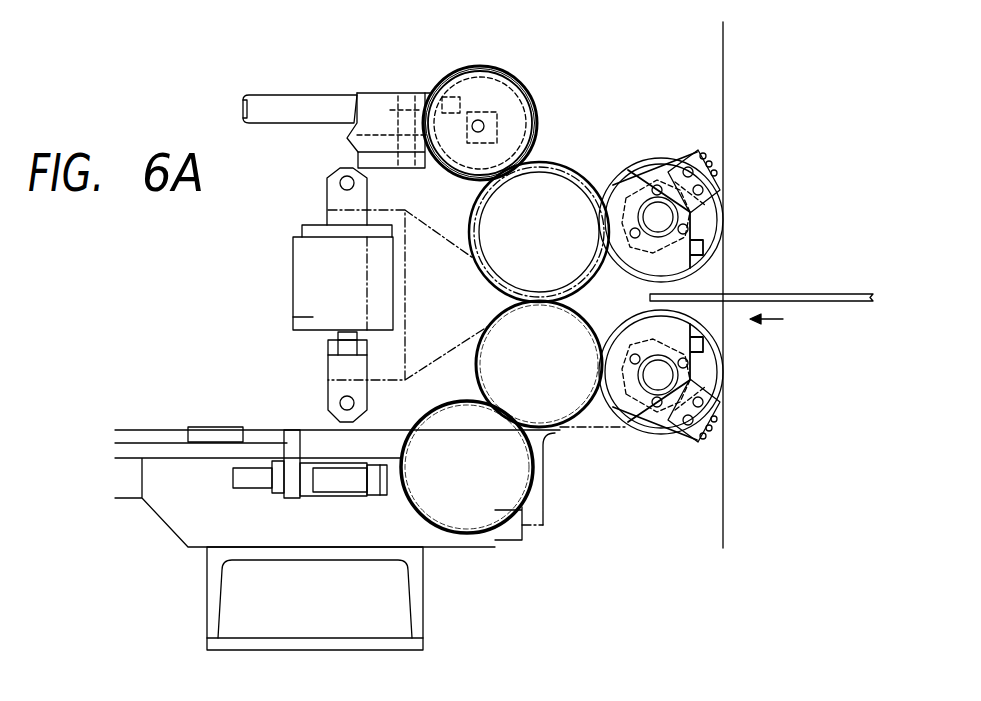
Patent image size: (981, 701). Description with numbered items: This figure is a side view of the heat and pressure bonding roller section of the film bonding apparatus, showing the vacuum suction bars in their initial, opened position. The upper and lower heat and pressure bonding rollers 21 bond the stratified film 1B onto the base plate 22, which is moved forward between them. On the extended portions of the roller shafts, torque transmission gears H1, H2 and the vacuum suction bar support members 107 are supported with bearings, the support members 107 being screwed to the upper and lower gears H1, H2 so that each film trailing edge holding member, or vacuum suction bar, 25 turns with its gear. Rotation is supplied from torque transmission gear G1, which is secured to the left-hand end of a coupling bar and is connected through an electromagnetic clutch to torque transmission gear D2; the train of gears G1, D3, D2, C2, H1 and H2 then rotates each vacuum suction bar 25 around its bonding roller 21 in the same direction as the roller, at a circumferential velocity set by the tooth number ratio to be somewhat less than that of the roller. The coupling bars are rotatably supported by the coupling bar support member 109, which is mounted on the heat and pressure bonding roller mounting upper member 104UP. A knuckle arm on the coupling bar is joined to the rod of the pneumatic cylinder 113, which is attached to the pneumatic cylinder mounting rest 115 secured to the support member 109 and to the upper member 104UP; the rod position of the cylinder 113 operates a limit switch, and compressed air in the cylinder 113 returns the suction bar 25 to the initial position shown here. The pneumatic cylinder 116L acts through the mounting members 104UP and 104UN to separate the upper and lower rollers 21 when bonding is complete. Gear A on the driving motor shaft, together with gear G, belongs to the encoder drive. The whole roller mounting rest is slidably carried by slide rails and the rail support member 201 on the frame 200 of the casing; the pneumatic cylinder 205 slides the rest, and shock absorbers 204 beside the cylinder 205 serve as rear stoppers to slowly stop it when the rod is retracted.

The stratified film 1B is at (725, 72).
The base plate 22 is at (773, 290).
The torque transmission gear G is at (493, 66).
The torque transmission gear G1 is at (522, 88).
The torque transmission gear D2 is at (573, 167).
The torque transmission gear D3 is at (541, 158).
The torque transmission gear C2 is at (573, 422).
The torque transmission gear A is at (502, 516).
The pneumatic cylinder 113 is at (292, 103).
The pneumatic cylinder mounting rest 115 is at (372, 100).
The coupling bar support member 109 is at (403, 96).
The heat and pressure bonding roller mounting upper member 104UP is at (383, 196).
The pneumatic cylinder 116L is at (305, 323).
The heat and pressure bonding roller mounting member 104UN is at (385, 392).
The pneumatic cylinder 205 is at (200, 427).
The rail support member 201 is at (185, 528).
The frame 200 is at (230, 590).
The shock absorber 204 is at (333, 487).
The torque transmission gear H1 is at (637, 183).
The torque transmission gear H2 is at (623, 410).
The heat and pressure bonding roller 21 is at (655, 157).
The vacuum suction bar support member 107 is at (665, 187).
The film trailing edge holding member 25 is at (695, 150).